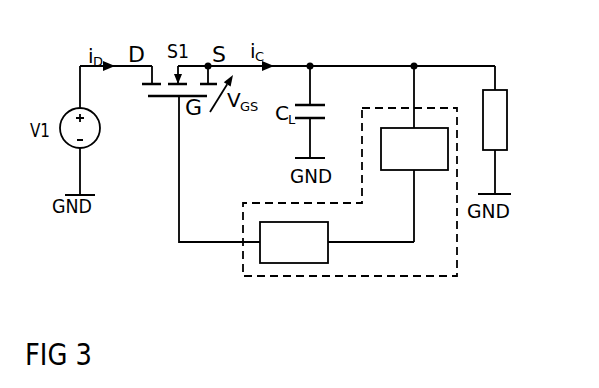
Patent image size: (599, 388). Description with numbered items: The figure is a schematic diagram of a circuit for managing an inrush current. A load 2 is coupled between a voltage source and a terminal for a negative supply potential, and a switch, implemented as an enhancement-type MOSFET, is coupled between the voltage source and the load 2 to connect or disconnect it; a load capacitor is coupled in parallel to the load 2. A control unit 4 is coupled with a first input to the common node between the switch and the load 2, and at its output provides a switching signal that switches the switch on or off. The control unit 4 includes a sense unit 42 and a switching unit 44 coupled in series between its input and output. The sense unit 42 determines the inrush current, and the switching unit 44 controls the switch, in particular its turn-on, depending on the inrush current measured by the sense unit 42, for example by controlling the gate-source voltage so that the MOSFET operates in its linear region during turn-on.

The load 2 is at (504, 130).
The control unit 4 is at (350, 204).
The sense unit 42 is at (403, 162).
The switching unit 44 is at (283, 254).